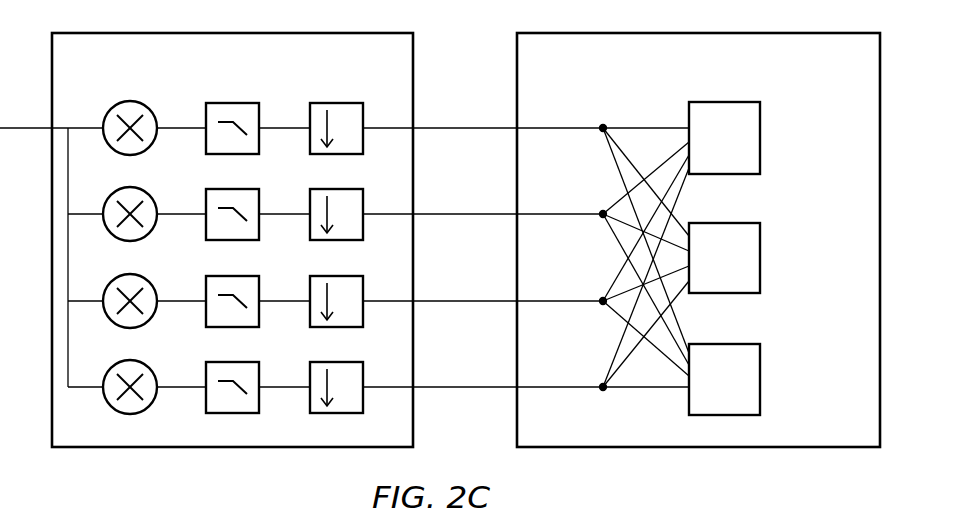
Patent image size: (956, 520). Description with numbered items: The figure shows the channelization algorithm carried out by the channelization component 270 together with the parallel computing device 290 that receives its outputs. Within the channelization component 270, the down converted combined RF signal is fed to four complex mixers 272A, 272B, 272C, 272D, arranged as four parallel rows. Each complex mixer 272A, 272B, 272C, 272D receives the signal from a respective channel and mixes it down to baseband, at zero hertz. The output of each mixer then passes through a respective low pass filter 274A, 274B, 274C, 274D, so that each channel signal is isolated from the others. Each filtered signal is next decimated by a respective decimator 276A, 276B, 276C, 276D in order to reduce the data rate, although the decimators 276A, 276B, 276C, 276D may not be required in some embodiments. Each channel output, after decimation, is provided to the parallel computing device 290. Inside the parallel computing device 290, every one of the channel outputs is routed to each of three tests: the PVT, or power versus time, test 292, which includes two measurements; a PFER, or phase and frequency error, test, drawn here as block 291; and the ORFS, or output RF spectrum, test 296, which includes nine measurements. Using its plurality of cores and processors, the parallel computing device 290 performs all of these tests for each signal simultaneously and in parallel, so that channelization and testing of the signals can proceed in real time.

The channelization component 270 is at (367, 57).
The complex mixer 272A is at (130, 116).
The complex mixer 272B is at (130, 202).
The complex mixer 272C is at (130, 289).
The complex mixer 272D is at (130, 375).
The low pass filter 274A is at (232, 115).
The low pass filter 274B is at (232, 201).
The low pass filter 274C is at (232, 288).
The low pass filter 274D is at (232, 374).
The decimator 276A is at (336, 115).
The decimator 276B is at (336, 201).
The decimator 276C is at (336, 288).
The decimator 276D is at (336, 374).
The parallel computing device 290 is at (830, 57).
The PFER module 291 is at (708, 279).
The PVT test 292 is at (708, 157).
The ORFS test 296 is at (708, 400).